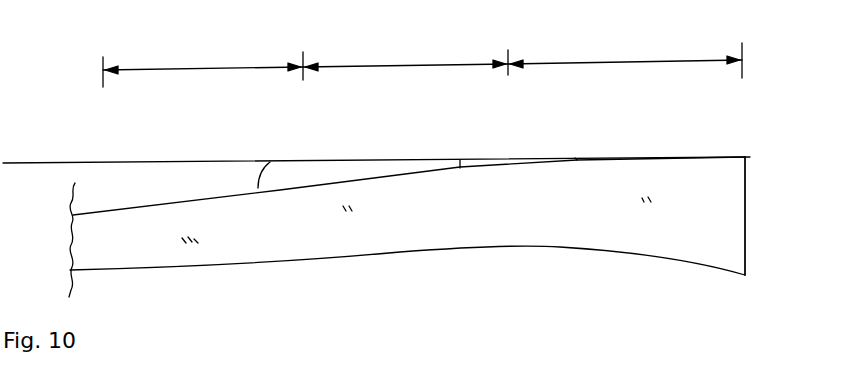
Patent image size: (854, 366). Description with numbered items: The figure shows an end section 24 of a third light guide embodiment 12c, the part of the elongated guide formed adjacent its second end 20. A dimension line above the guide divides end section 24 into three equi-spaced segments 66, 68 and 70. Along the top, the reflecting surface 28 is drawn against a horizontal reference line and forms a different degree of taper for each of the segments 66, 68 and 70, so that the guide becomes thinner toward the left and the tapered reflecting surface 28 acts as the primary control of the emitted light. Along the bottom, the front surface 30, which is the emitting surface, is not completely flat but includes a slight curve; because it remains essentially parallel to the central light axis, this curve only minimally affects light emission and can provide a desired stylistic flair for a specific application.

The segment 70 is at (215, 68).
The segment 68 is at (408, 65).
The segment 66 is at (622, 62).
The reflecting surface 28 is at (166, 201).
The front surface 30 is at (523, 253).
The second end section 24 is at (432, 286).
The light guide 12c is at (300, 280).
The second end 20 is at (737, 222).